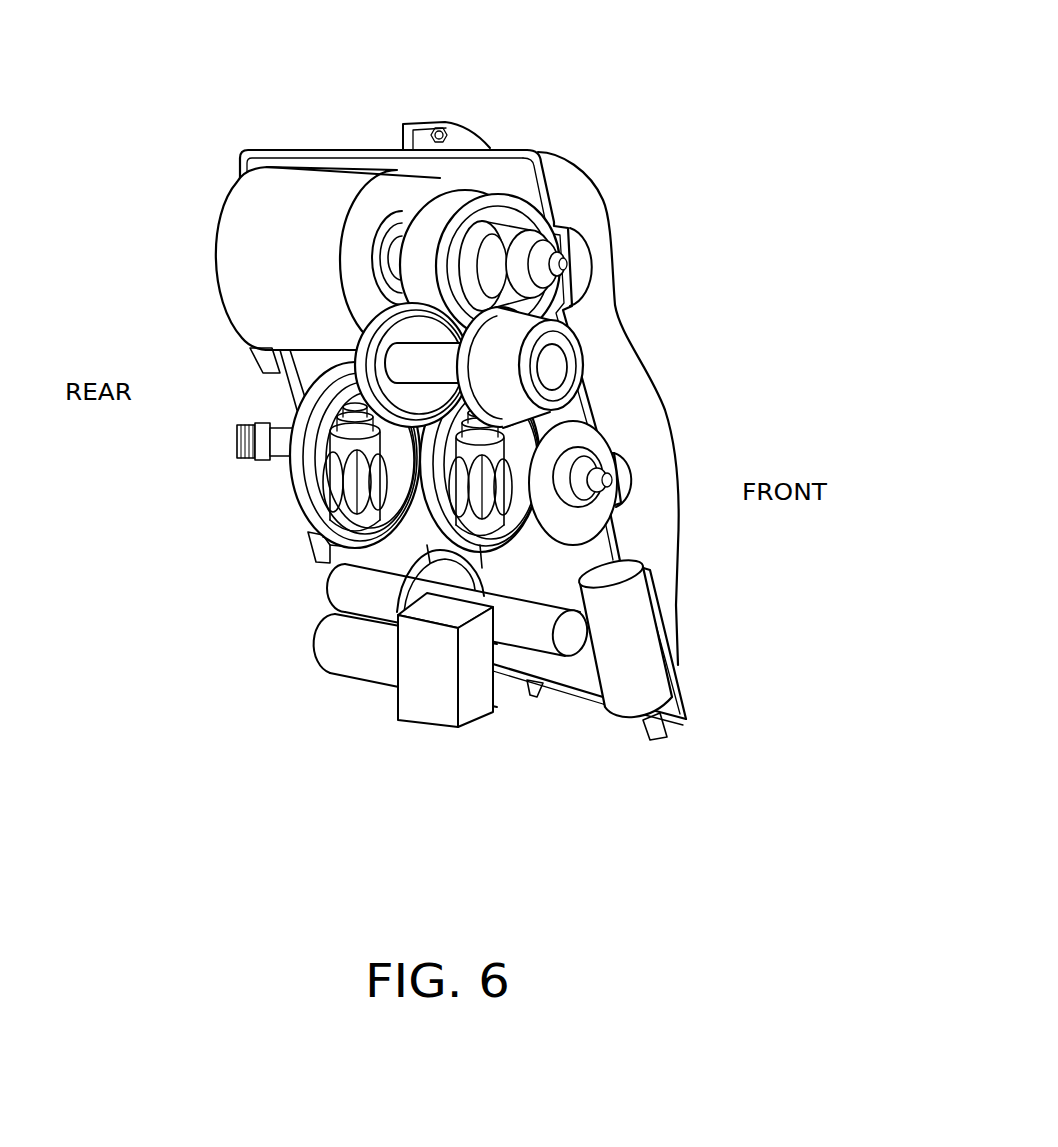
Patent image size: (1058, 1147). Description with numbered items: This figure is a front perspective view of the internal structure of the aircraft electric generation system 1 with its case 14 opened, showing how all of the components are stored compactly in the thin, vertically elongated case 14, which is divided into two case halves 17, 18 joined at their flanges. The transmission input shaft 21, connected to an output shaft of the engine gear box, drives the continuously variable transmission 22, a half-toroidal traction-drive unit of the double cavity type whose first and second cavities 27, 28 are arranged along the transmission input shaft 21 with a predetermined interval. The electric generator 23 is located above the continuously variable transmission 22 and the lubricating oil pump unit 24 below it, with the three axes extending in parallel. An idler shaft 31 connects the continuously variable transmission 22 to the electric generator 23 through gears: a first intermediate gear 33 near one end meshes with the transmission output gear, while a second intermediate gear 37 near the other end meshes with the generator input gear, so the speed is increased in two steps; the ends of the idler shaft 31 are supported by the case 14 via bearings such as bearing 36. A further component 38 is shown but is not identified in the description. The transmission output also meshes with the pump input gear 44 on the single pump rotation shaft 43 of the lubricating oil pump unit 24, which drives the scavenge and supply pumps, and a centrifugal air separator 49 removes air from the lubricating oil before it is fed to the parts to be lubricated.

The aircraft electric generation system 1 is at (690, 92).
The case 14 is at (690, 413).
The case half 17 is at (284, 150).
The case half 18 is at (567, 173).
The transmission input shaft 21 is at (240, 437).
The continuously variable transmission 22 is at (270, 488).
The electric generator 23 is at (269, 282).
The lubricating oil pump unit 24 is at (360, 602).
The first cavity 27 is at (350, 558).
The second cavity 28 is at (447, 572).
The idler shaft 31 is at (397, 247).
The first intermediate gear 33 is at (432, 355).
The bearing 36 is at (240, 305).
The second intermediate gear 37 is at (530, 345).
The large pulley 38 is at (497, 200).
The pump rotation shaft 43 is at (513, 630).
The pump input gear 44 is at (380, 603).
The centrifugal air separator 49 is at (403, 672).